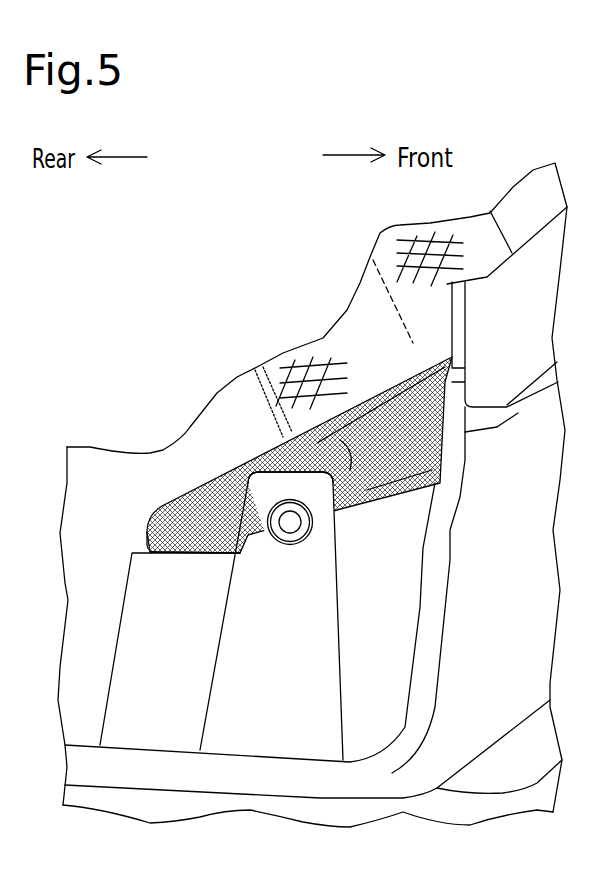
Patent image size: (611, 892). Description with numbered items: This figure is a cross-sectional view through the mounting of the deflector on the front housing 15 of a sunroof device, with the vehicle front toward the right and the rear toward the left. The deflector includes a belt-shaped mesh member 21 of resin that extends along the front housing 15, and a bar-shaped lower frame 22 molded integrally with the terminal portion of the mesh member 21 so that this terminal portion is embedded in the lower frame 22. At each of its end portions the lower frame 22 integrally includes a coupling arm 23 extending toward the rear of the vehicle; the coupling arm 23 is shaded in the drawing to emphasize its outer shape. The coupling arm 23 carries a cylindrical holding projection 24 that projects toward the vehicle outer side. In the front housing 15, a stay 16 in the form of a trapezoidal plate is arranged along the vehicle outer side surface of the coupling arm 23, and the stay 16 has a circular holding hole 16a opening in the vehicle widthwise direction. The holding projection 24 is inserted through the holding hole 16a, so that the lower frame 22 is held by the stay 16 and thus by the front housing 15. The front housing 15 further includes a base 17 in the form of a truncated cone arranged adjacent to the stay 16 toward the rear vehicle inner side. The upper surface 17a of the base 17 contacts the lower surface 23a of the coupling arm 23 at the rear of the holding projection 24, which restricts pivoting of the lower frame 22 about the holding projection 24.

The front housing 15 is at (546, 620).
The stay 16 is at (335, 641).
The holding hole 16a is at (240, 553).
The base 17 is at (130, 621).
The upper surface of the base 17a is at (150, 543).
The mesh member 21 is at (516, 211).
The lower frame 22 is at (413, 487).
The coupling arm 23 is at (168, 508).
The lower surface of the coupling arm 23a is at (178, 555).
The holding projection 24 is at (290, 530).